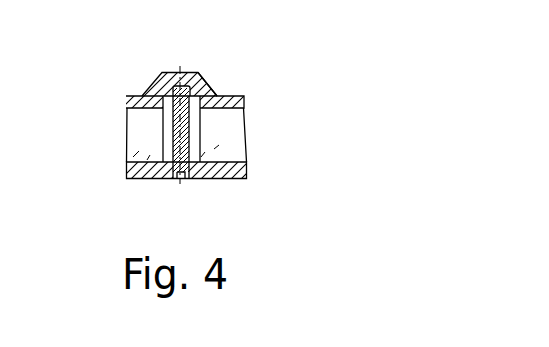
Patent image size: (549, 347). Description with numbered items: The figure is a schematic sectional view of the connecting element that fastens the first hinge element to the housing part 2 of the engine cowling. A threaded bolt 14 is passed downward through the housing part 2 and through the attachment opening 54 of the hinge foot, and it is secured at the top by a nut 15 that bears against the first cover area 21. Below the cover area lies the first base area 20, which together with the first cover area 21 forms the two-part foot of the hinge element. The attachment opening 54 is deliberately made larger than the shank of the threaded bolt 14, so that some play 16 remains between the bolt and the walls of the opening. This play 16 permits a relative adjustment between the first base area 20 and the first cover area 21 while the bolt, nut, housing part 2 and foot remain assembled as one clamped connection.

The housing part 2 is at (143, 168).
The threaded bolt 14 is at (156, 80).
The nut 15 is at (205, 73).
The play 16 is at (197, 122).
The first base area 20 is at (126, 130).
The first cover area 21 is at (125, 98).
The attachment opening 54 is at (165, 173).